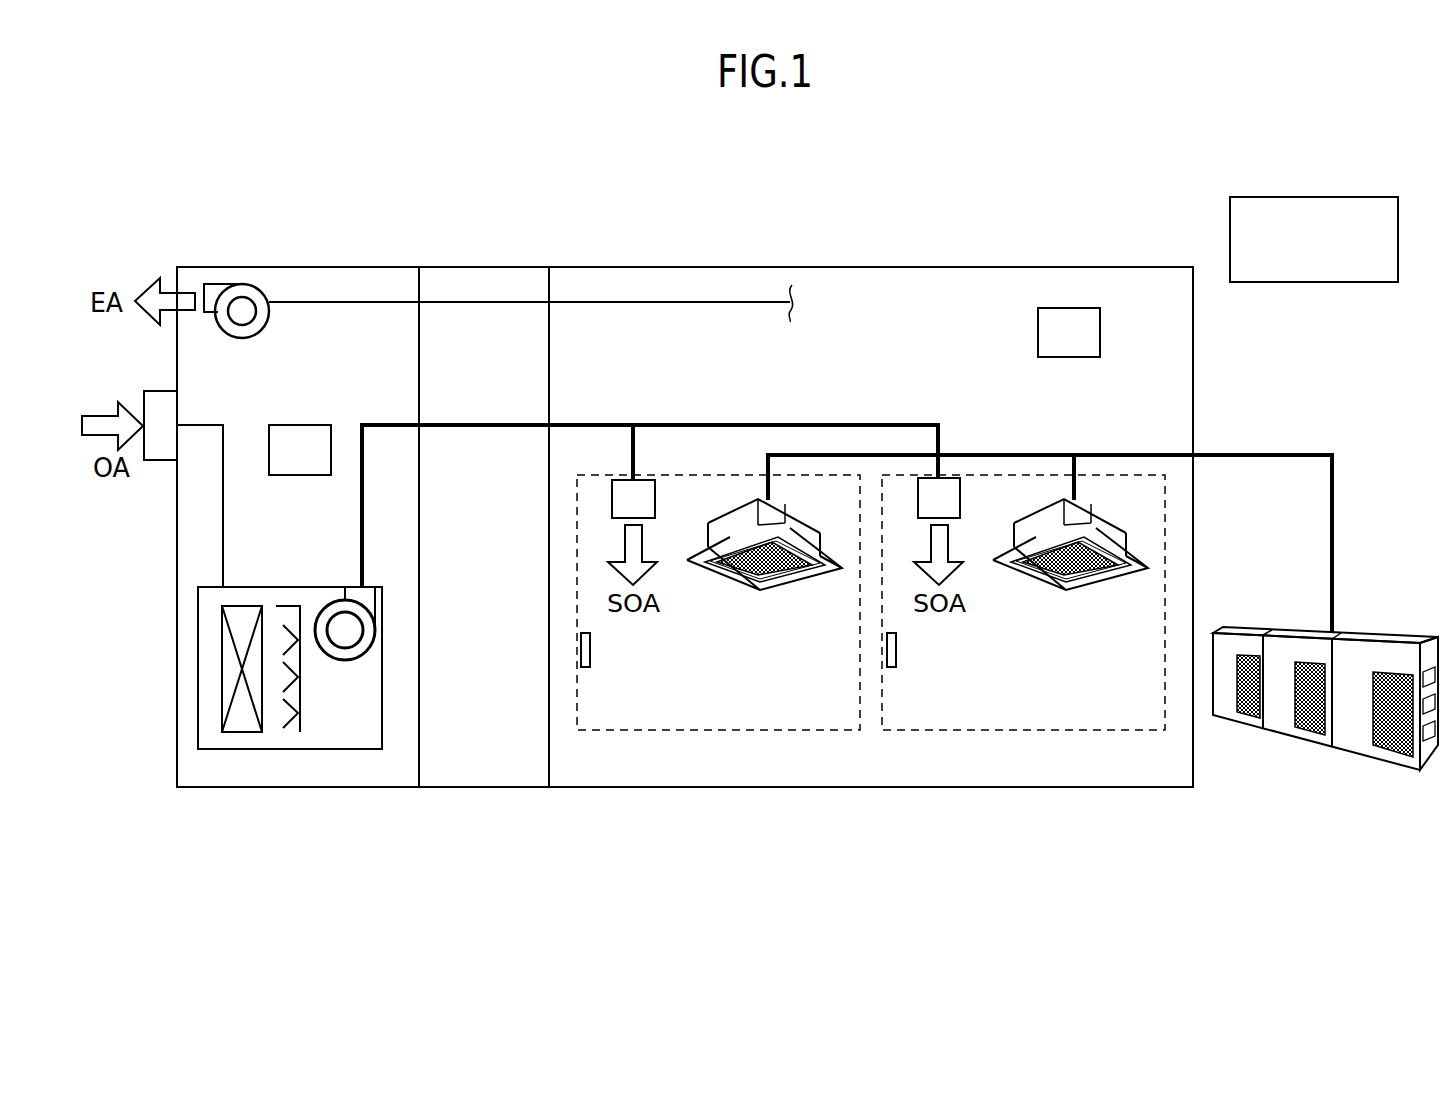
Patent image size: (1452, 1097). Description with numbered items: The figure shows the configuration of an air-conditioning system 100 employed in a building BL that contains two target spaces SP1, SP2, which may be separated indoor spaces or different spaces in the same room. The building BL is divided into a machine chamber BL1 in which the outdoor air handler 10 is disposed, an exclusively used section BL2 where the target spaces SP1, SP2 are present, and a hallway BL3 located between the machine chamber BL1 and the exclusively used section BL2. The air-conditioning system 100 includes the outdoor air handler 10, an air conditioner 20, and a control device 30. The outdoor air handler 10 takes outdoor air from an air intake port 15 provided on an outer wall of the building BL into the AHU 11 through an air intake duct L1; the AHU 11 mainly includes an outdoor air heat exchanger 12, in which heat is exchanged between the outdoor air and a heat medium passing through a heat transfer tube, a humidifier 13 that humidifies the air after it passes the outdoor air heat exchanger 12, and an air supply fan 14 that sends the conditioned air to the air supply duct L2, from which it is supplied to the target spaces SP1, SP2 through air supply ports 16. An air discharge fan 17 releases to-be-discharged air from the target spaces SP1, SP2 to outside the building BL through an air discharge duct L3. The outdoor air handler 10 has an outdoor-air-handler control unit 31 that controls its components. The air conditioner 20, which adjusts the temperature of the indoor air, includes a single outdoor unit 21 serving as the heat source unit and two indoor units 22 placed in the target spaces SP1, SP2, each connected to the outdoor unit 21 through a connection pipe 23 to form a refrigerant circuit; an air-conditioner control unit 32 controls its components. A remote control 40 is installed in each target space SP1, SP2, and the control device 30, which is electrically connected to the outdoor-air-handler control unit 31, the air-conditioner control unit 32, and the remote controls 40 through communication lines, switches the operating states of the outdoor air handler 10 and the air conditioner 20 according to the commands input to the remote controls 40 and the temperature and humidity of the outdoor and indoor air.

The air-conditioning system 100 is at (840, 300).
The building BL is at (1110, 263).
The machine chamber BL1 is at (352, 280).
The exclusively used section BL2 is at (988, 282).
The hallway BL3 is at (483, 280).
The air intake duct L1 is at (200, 424).
The air supply duct L2 is at (468, 424).
The air discharge duct L3 is at (638, 300).
The outdoor air handler 10 is at (279, 680).
The AHU 11 is at (242, 587).
The outdoor air heat exchanger 12 is at (242, 732).
The humidifier 13 is at (288, 606).
The air supply fan 14 is at (345, 660).
The air intake port 15 is at (160, 391).
The air supply port 16 is at (640, 480).
The air discharge fan 17 is at (269, 312).
The air conditioner 20 is at (1325, 654).
The outdoor unit 21 is at (1353, 612).
The indoor unit 22 is at (793, 505).
The connection pipe 23 is at (1117, 455).
The control device 30 is at (1338, 196).
The outdoor-air-handler control unit 31 is at (318, 424).
The air-conditioner control unit 32 is at (1100, 332).
The remote control 40 is at (590, 650).
The target space SP1 is at (817, 721).
The target space SP2 is at (1122, 721).